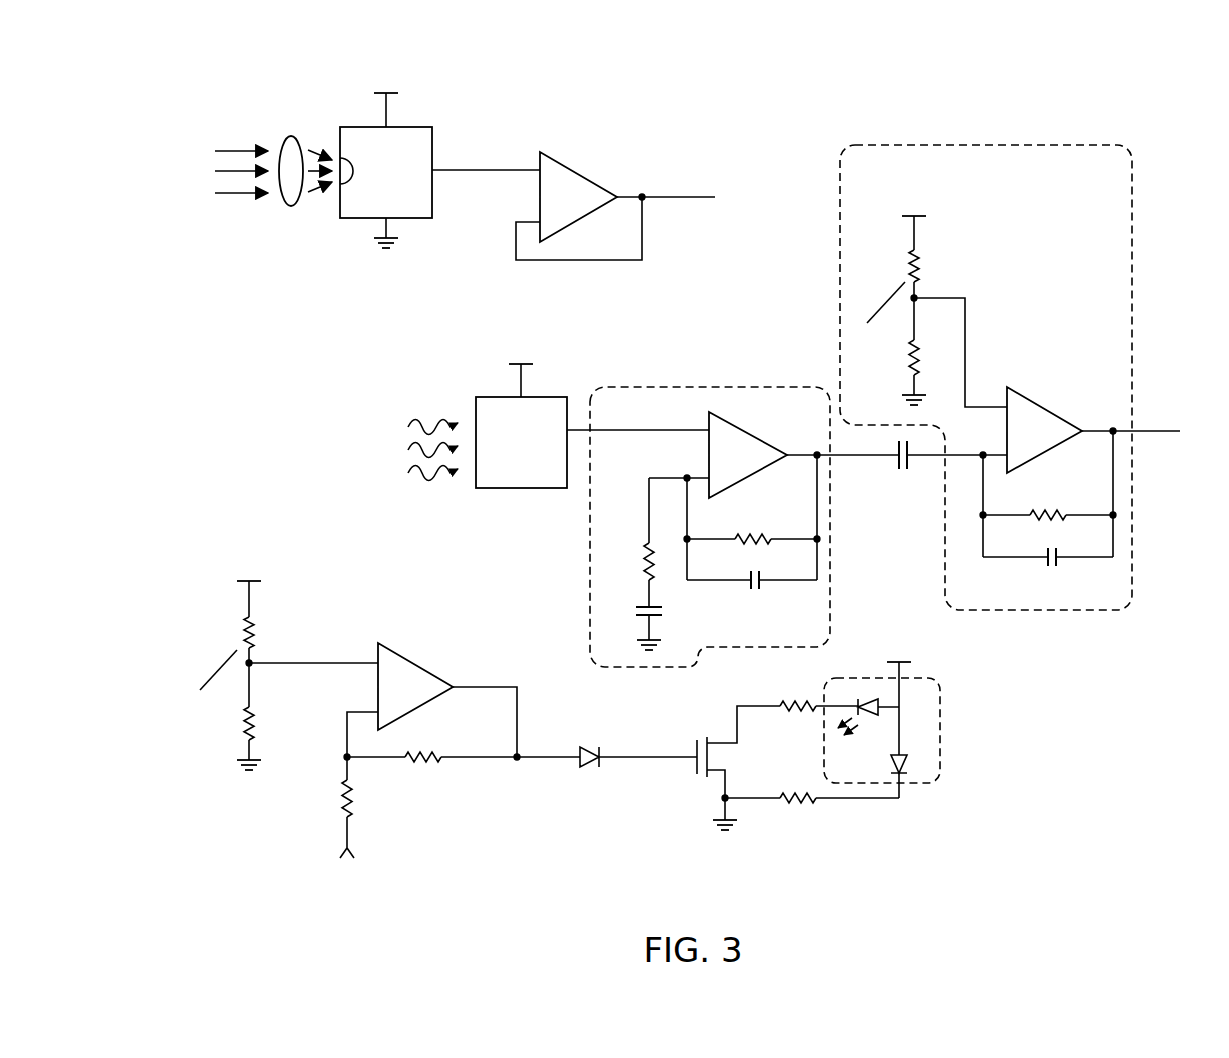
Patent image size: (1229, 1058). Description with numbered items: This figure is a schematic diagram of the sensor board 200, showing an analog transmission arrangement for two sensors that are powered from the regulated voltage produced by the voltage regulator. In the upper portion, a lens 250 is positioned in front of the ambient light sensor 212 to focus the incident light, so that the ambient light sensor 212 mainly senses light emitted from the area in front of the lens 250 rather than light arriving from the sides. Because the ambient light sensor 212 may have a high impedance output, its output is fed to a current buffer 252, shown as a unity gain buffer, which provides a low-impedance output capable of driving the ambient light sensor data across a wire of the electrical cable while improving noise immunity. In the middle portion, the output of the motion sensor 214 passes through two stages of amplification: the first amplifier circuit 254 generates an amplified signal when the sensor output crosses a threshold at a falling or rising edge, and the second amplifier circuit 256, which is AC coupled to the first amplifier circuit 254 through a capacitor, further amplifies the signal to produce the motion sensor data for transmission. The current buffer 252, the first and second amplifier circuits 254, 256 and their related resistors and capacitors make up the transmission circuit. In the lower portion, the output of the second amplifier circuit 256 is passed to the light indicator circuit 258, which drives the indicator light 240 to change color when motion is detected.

The sensor board 200 is at (1165, 118).
The lens 250 is at (289, 206).
The ambient light sensor 212 is at (432, 140).
The current buffer 252 is at (580, 165).
The motion sensor 214 is at (520, 490).
The first amplifier circuit 254 is at (715, 387).
The second amplifier circuit 256 is at (990, 145).
The light indicator circuit 258 is at (232, 855).
The indicator light 240 is at (940, 732).